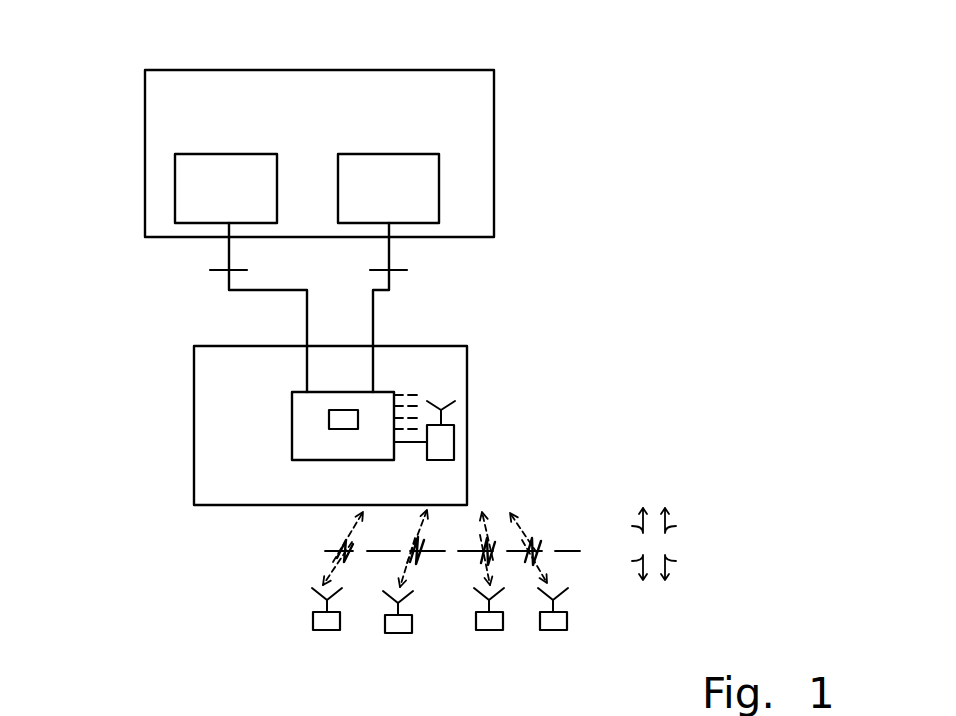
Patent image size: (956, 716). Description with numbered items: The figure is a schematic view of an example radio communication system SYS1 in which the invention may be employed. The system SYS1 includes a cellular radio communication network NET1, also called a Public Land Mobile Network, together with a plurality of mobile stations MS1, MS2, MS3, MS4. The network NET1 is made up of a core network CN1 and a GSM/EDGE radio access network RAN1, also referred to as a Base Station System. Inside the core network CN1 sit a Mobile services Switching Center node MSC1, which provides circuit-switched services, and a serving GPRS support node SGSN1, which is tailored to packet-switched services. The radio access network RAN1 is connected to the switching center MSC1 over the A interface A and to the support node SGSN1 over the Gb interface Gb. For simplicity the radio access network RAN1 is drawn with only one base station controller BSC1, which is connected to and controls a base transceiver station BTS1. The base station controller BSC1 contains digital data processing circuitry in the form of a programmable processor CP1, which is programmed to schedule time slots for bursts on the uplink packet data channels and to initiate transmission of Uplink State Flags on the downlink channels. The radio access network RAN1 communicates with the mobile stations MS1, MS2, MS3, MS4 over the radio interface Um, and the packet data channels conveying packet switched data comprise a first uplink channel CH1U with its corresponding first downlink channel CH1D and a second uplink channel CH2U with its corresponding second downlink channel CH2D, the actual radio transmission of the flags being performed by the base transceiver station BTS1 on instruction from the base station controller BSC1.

The radio communication system SYS1 is at (712, 44).
The cellular radio communication network NET1 is at (92, 139).
The core network CN1 is at (136, 60).
The Mobile services Switching Center node MSC1 is at (223, 154).
The serving GPRS support node SGSN1 is at (383, 154).
The A interface A is at (197, 270).
The Gb interface Gb is at (420, 270).
The radio access network RAN1 is at (184, 337).
The base station controller BSC1 is at (292, 422).
The programmable processor CP1 is at (358, 418).
The base transceiver station BTS1 is at (450, 460).
The Um interface Um is at (426, 546).
The mobile station MS1 is at (333, 631).
The mobile station MS2 is at (404, 634).
The mobile station MS3 is at (493, 631).
The mobile station MS4 is at (568, 631).
The first uplink Packet Data Channel CH1U is at (607, 529).
The first downlink Packet Data Channel CH1D is at (607, 571).
The second uplink Packet Data Channel CH2U is at (698, 529).
The second downlink Packet Data Channel CH2D is at (699, 571).